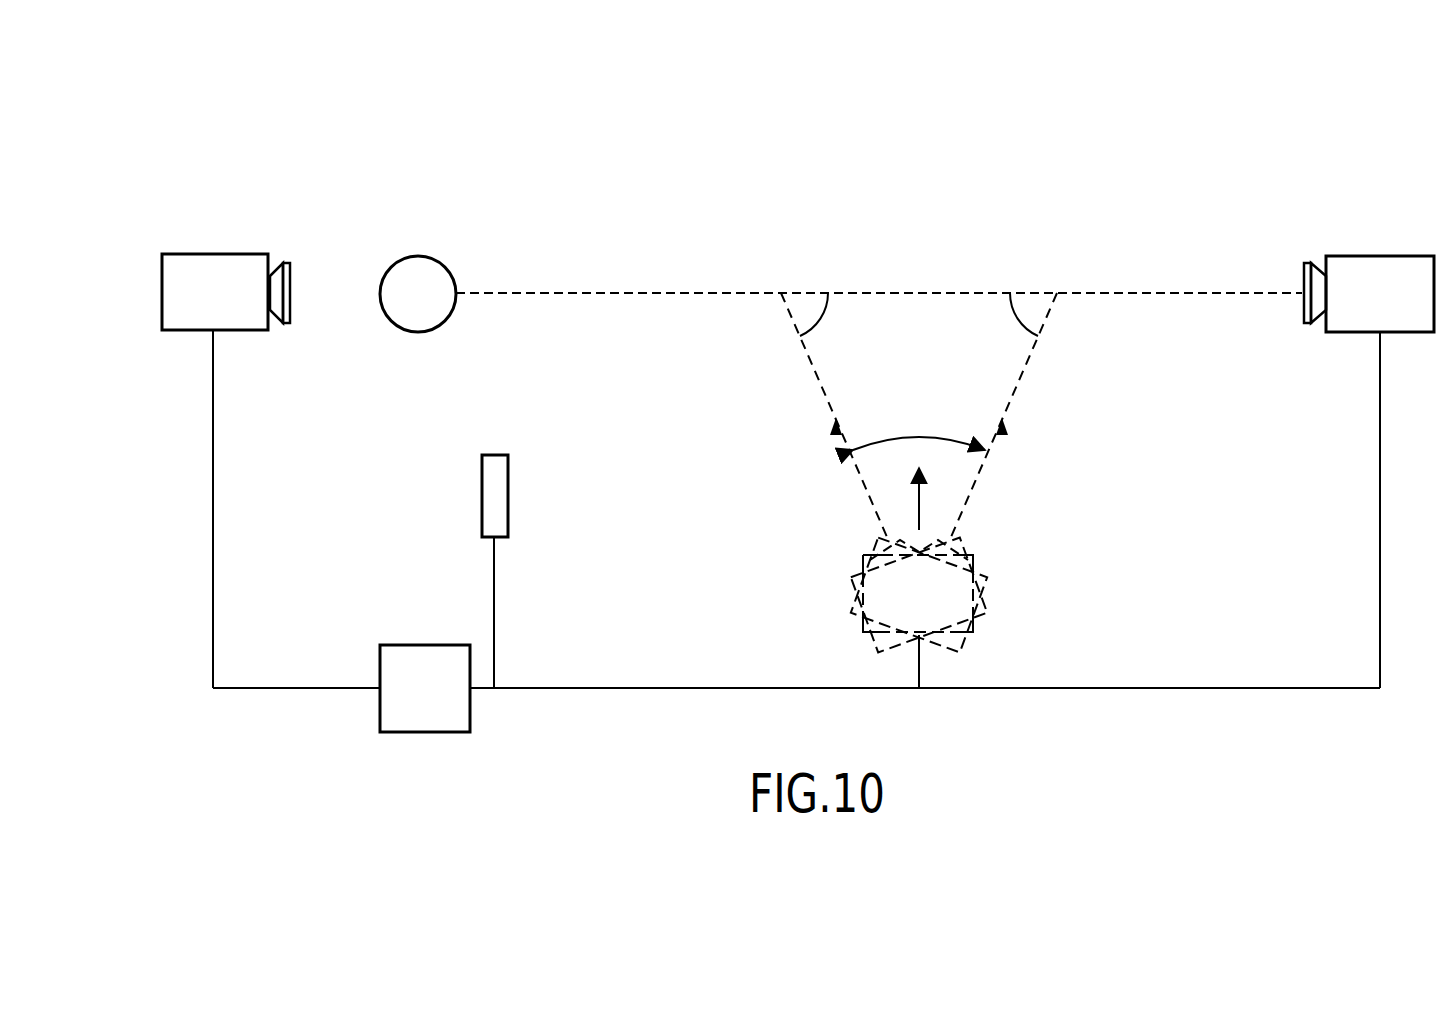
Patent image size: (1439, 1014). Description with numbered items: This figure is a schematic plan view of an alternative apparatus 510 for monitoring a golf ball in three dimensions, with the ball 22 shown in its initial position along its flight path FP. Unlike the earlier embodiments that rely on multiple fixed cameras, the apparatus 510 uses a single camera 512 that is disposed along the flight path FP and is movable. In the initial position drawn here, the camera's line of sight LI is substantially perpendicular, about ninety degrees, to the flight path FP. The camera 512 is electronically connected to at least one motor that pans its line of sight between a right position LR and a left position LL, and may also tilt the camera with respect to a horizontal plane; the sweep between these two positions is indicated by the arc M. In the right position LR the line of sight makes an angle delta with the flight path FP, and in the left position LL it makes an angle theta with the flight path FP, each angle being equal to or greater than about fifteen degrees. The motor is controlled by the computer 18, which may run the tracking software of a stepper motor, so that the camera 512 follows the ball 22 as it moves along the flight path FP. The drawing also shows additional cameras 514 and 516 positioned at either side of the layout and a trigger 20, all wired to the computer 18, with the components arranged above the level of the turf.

The alternative apparatus 510 is at (912, 130).
The first camera 514 is at (196, 254).
The second camera 516 is at (1356, 256).
The ball 22 is at (418, 256).
The flight path FP is at (934, 290).
The right position LR is at (858, 471).
The left position LL is at (978, 470).
The line of sight LI is at (921, 507).
The angle between lines of sight M is at (912, 437).
The angle δ delta is at (822, 322).
The angle θ theta is at (1016, 322).
The camera 512 is at (973, 630).
The computer 18 is at (470, 705).
The trigger 20 is at (482, 484).